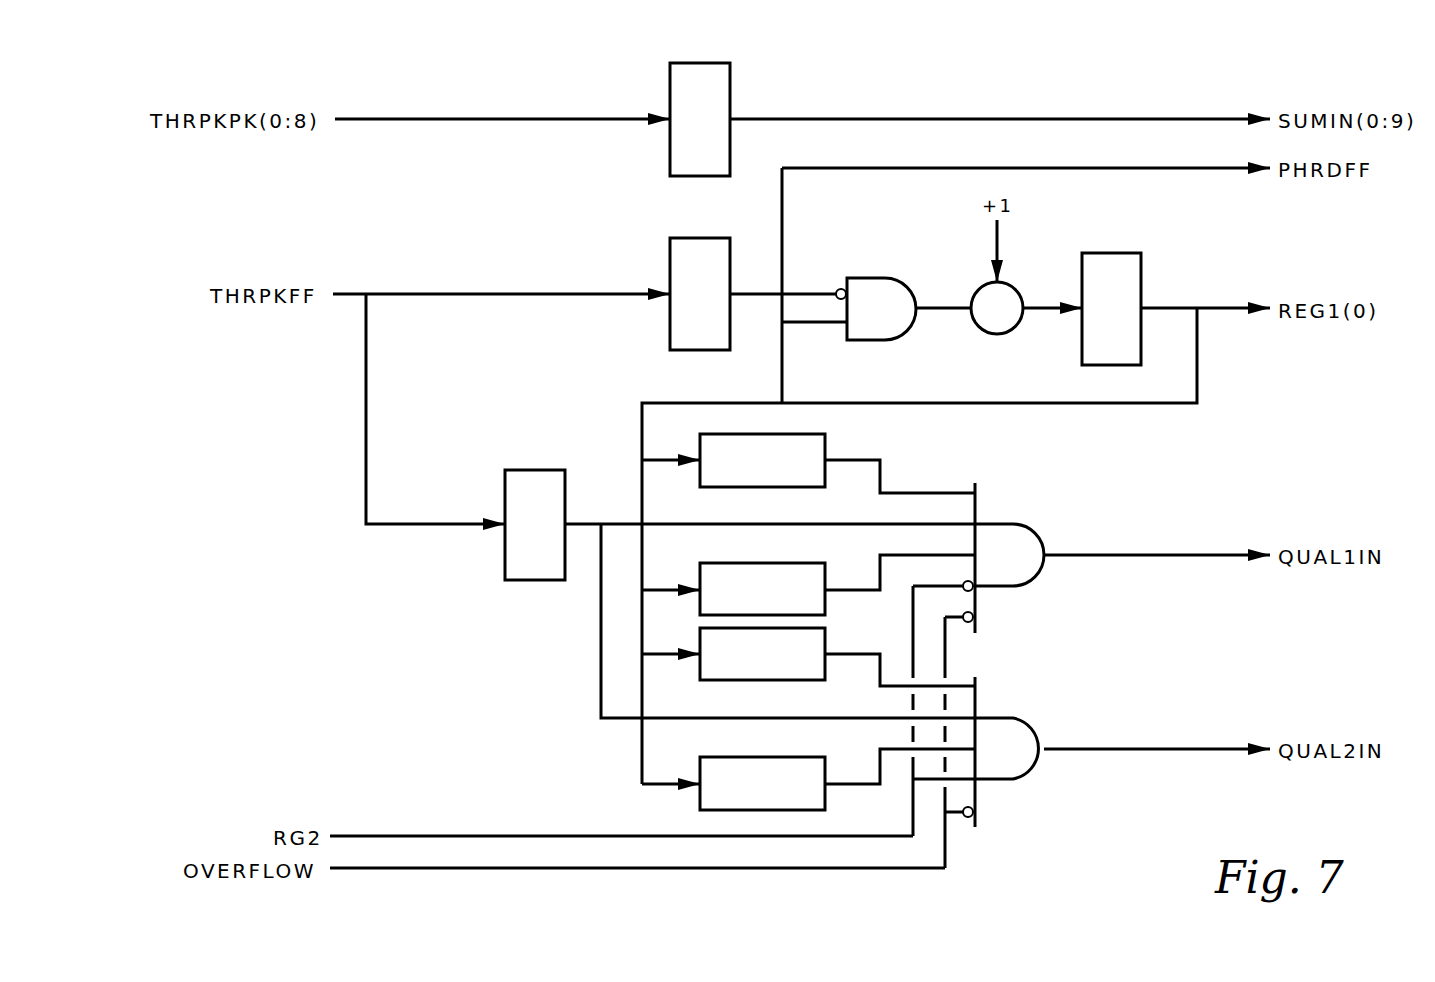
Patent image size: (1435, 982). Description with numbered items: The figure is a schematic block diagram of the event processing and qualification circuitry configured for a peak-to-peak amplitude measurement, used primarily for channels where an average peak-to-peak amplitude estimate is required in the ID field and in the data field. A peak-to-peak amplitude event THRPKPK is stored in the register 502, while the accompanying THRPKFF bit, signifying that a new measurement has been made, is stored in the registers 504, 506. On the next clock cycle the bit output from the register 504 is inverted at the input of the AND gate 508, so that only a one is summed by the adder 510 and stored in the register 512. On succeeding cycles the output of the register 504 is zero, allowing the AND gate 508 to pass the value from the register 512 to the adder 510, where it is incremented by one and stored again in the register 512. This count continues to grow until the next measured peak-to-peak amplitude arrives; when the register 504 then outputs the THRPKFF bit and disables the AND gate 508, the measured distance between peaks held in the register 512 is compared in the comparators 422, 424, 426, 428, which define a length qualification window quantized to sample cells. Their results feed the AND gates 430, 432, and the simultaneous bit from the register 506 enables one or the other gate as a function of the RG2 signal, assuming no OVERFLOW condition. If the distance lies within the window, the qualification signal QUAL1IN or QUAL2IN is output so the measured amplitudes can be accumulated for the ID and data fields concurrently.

The register 502 is at (704, 63).
The register 504 is at (704, 238).
The register 506 is at (538, 470).
The AND gate 508 is at (904, 282).
The adder 510 is at (1008, 334).
The register 512 is at (1112, 253).
The comparator 422 is at (837, 452).
The comparator 424 is at (825, 600).
The comparator 426 is at (825, 672).
The comparator 428 is at (825, 798).
The AND gate 430 is at (1026, 527).
The AND gate 432 is at (1026, 719).